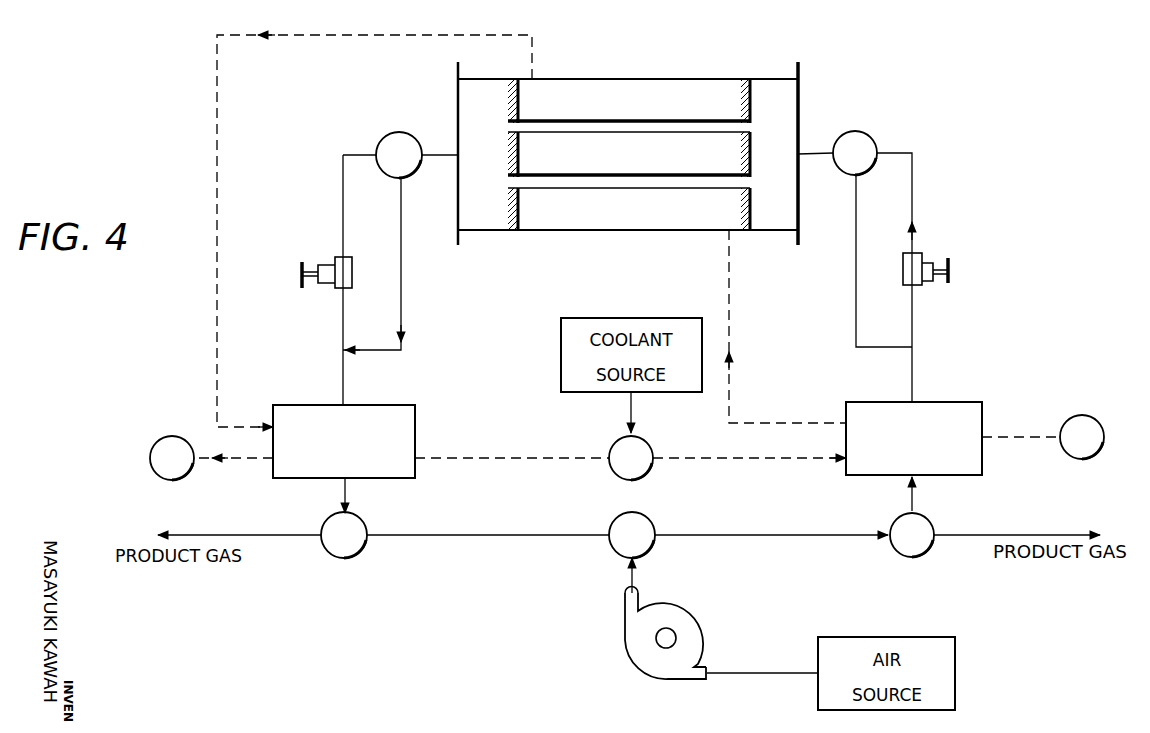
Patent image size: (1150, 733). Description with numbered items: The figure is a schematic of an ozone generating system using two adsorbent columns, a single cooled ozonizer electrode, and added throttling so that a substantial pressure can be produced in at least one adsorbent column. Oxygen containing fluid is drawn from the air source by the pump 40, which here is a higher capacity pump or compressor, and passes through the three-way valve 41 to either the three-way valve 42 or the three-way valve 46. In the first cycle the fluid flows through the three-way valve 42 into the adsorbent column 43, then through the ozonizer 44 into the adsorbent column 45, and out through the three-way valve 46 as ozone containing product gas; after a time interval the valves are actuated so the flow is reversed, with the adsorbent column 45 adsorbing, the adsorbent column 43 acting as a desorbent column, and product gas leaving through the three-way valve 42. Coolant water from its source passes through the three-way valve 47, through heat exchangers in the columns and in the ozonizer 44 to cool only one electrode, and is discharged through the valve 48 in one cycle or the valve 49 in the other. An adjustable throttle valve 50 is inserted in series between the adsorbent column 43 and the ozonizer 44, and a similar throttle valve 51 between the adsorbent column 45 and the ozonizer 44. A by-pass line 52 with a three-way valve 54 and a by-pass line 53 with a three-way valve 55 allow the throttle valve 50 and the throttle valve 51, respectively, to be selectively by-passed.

The pump 40 is at (651, 655).
The three-way valve 41 is at (655, 532).
The three-way valve 42 is at (918, 557).
The adsorbent column 43 is at (982, 402).
The ozonizer 44 is at (664, 66).
The adsorbent column 45 is at (415, 410).
The three-way valve 46 is at (366, 531).
The three-way valve 47 is at (625, 480).
The valve 48 is at (158, 477).
The valve 49 is at (1098, 420).
The adjustable throttle valve 50 is at (922, 253).
The throttle valve 51 is at (338, 258).
The by-pass line 52 is at (856, 266).
The by-pass line 53 is at (403, 307).
The three-way valve 54 is at (868, 133).
The three-way valve 55 is at (410, 132).